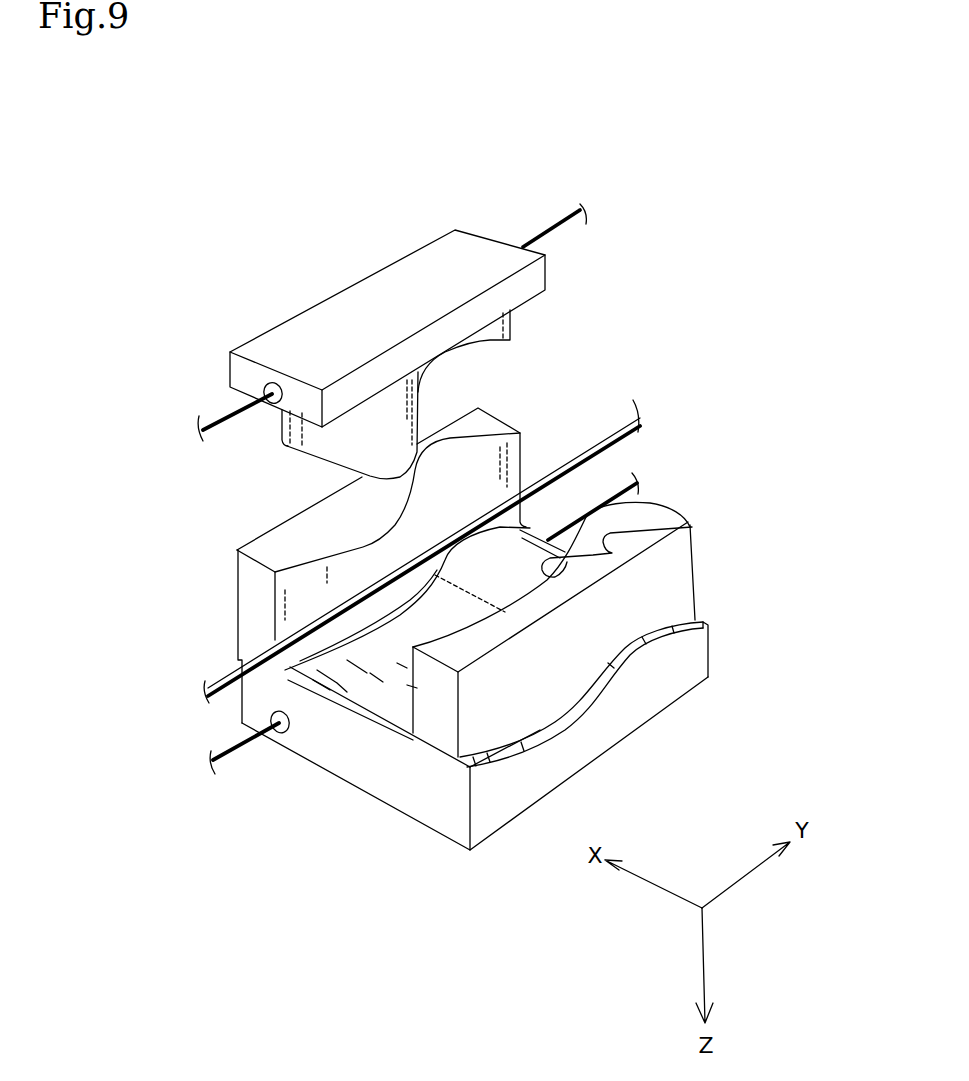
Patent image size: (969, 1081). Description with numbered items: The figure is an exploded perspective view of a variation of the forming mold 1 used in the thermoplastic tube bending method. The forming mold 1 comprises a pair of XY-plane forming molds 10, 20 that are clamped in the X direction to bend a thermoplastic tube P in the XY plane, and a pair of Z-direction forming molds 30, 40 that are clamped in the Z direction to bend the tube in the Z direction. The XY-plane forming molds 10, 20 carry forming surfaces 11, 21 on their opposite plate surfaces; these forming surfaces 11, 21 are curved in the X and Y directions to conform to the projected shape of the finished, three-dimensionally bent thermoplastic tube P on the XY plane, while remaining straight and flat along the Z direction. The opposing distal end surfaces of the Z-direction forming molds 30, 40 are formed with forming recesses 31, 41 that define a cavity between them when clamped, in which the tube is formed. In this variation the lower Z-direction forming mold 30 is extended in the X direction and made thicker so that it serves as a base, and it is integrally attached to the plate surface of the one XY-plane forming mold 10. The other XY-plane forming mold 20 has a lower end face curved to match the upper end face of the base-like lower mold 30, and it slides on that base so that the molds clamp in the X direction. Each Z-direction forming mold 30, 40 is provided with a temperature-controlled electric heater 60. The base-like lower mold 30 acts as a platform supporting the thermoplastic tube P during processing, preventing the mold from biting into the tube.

The forming mold 1 is at (248, 492).
The XY-plane forming mold 10 is at (265, 552).
The forming surface 11 is at (345, 568).
The XY-plane forming mold 20 is at (583, 637).
The forming surface 21 is at (692, 527).
The lower Z-direction forming mold 30 is at (307, 743).
The forming recess 31 is at (348, 633).
The upper Z-direction forming mold 40 is at (398, 300).
The forming recess 41 is at (490, 341).
The electric heater 60 is at (278, 382).
The thermoplastic tube P is at (288, 664).